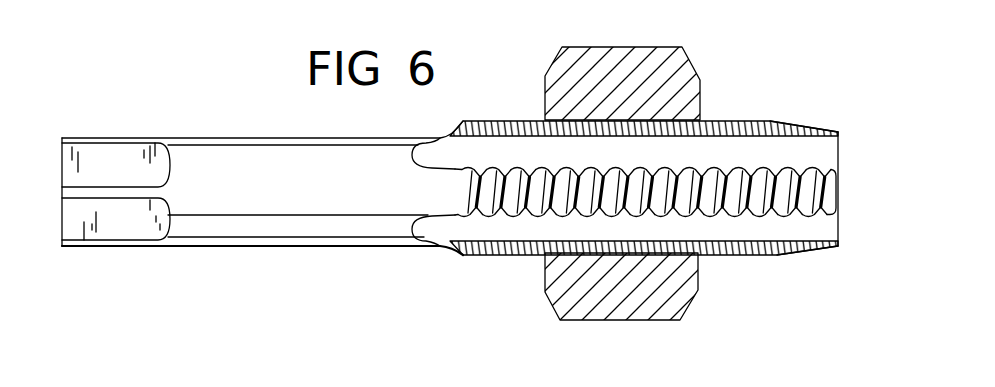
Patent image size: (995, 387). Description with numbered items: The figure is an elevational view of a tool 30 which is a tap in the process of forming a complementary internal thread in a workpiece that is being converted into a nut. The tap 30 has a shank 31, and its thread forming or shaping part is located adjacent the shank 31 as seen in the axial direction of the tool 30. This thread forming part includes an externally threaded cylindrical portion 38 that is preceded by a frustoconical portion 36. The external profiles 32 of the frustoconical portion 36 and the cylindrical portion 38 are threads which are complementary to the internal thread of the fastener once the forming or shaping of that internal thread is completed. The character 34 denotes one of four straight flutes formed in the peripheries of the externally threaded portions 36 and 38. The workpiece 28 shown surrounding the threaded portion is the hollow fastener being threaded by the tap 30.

The nut 28 is at (598, 322).
The tool 30 is at (266, 120).
The shank 31 is at (293, 200).
The external profiles 32 is at (736, 255).
The straight flute 34 is at (796, 240).
The frustoconical portion 36 is at (808, 115).
The externally threaded cylindrical portion 38 is at (712, 120).